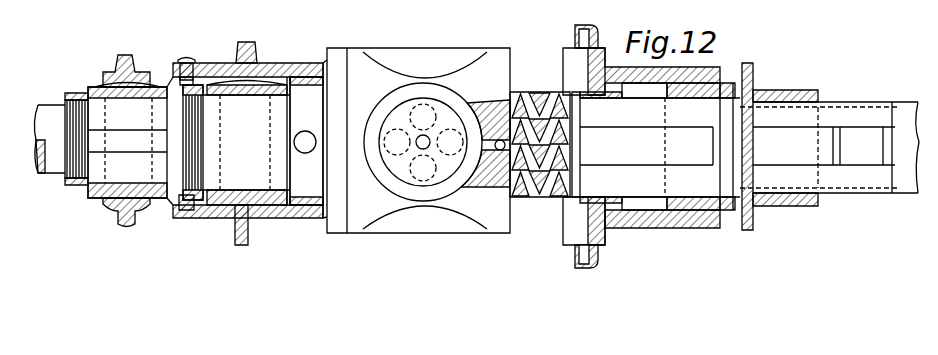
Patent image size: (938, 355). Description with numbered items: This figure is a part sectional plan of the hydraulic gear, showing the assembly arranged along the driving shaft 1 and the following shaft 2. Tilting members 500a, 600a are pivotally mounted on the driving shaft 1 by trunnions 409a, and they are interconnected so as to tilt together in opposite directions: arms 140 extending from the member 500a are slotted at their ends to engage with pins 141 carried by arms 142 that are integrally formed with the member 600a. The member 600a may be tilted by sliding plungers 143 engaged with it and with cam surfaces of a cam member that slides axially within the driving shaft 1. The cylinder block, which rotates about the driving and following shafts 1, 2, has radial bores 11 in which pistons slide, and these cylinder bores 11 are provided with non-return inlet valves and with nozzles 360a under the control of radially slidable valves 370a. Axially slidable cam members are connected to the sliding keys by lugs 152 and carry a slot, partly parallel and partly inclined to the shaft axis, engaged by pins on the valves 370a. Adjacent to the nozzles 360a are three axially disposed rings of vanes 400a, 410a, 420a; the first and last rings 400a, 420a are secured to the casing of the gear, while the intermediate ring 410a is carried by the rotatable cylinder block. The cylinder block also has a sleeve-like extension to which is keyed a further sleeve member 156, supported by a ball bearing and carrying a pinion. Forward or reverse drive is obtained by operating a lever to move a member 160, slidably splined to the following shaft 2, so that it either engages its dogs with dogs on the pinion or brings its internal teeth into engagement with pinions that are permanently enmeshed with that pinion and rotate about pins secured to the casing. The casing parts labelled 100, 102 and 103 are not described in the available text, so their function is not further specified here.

The driving shaft 1 is at (58, 165).
The following shaft 2 is at (829, 147).
The radial bores 11 is at (428, 137).
The casing 100 is at (528, 2).
The casing part 102 is at (442, 11).
The casing part 103 is at (498, 11).
The arms 140 is at (150, 75).
The pins 141 is at (187, 57).
The arms 142 is at (212, 83).
The sliding plungers 143 is at (305, 131).
The lugs 152 is at (742, 225).
The sleeve member 156 is at (652, 222).
The member 160 is at (789, 86).
The nozzles 360a is at (488, 138).
The radially slidable valves 370a is at (496, 168).
The ring of vanes 400a is at (519, 198).
The trunnions 409a is at (113, 72).
The ring of vanes 410a is at (537, 198).
The ring of vanes 420a is at (560, 198).
The tilting member 500a is at (126, 226).
The tilting member 600a is at (244, 243).